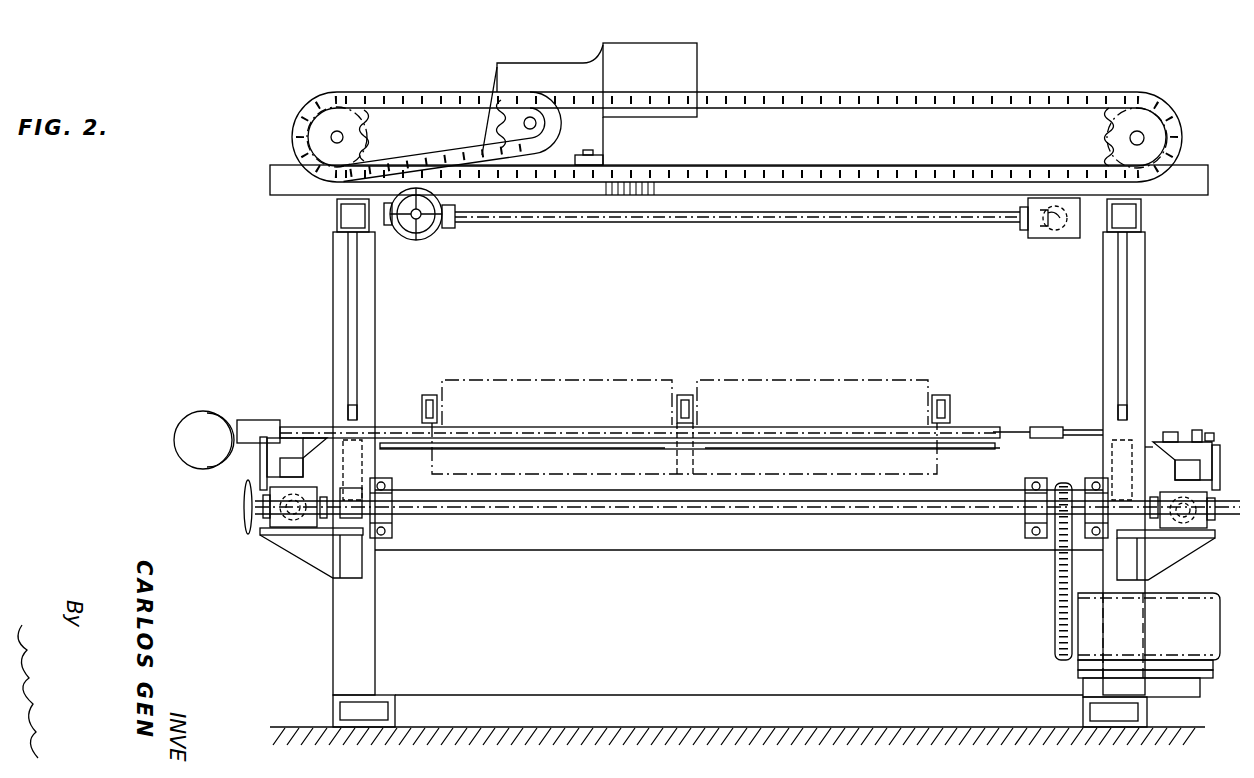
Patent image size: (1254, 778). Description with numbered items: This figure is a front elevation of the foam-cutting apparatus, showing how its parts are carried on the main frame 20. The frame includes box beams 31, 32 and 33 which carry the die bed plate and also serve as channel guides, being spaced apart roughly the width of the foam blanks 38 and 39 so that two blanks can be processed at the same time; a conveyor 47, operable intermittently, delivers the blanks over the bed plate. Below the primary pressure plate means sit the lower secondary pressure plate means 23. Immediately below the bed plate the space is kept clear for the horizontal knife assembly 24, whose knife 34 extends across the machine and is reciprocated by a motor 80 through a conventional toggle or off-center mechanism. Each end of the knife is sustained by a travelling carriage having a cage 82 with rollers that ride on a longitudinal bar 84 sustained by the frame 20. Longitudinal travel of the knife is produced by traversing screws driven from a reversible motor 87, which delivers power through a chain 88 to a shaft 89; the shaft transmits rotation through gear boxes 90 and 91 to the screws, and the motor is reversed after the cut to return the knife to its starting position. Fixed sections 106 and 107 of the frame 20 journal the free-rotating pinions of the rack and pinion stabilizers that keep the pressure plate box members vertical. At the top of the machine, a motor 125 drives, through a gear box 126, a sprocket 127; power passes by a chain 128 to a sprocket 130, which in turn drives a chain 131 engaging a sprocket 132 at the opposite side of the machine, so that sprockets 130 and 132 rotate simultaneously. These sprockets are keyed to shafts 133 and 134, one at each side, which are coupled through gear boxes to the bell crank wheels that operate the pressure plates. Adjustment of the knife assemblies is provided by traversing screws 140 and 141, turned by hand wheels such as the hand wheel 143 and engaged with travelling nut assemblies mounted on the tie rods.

The main frame 20 is at (331, 636).
The lower secondary pressure plate means 23 is at (690, 556).
The horizontal knife assembly 24 is at (300, 426).
The box beam 31 is at (951, 402).
The box beam 32 is at (683, 396).
The box beam 33 is at (425, 396).
The knife 34 is at (1015, 431).
The foam blank 38 is at (822, 380).
The foam blank 39 is at (538, 380).
The conveyor 47 is at (604, 466).
The motor 80 is at (198, 412).
The cage 82 is at (1220, 446).
The longitudinal bar 84 is at (1184, 458).
The motor 87 is at (1184, 650).
The chain 88 is at (1055, 578).
The shaft 89 is at (795, 516).
The gear box 90 is at (283, 528).
The gear box 91 is at (1192, 530).
The fixed section of the frame 106 is at (1145, 217).
The fixed section of the frame 107 is at (333, 212).
The motor 125 is at (697, 63).
The gear box 126 is at (527, 66).
The sprocket 127 is at (505, 127).
The chain 128 is at (480, 92).
The sprocket 130 is at (300, 111).
The chain 131 is at (802, 108).
The sprocket 132 is at (1107, 134).
The shaft 133 is at (330, 137).
The shaft 134 is at (1140, 131).
The traversing screw 140 is at (1055, 238).
The traversing screw 141 is at (436, 232).
The hand wheel 143 is at (418, 241).